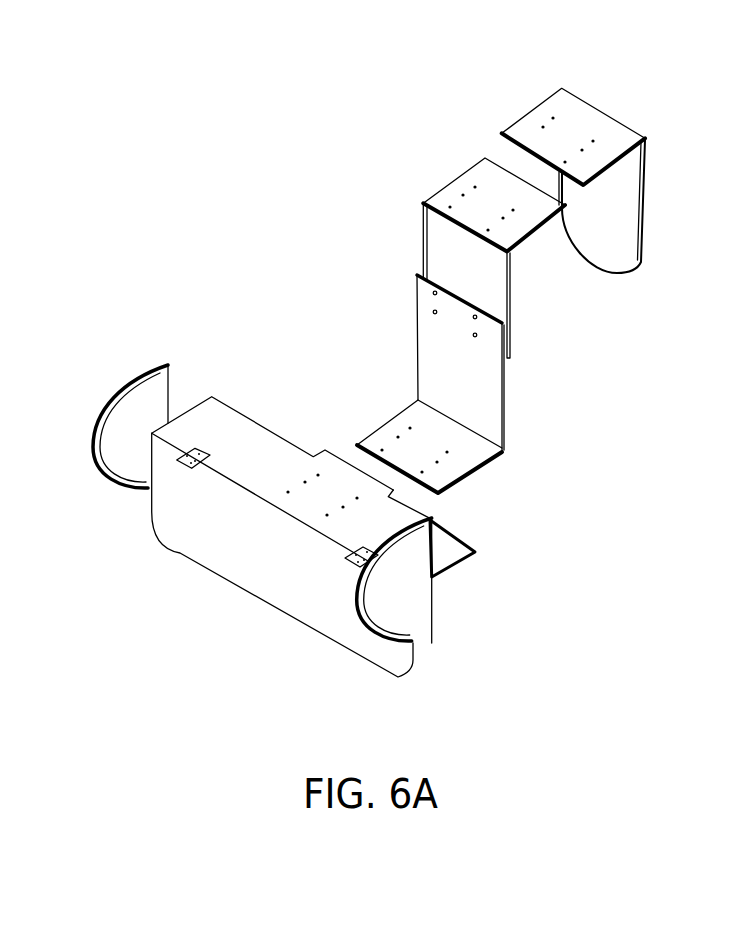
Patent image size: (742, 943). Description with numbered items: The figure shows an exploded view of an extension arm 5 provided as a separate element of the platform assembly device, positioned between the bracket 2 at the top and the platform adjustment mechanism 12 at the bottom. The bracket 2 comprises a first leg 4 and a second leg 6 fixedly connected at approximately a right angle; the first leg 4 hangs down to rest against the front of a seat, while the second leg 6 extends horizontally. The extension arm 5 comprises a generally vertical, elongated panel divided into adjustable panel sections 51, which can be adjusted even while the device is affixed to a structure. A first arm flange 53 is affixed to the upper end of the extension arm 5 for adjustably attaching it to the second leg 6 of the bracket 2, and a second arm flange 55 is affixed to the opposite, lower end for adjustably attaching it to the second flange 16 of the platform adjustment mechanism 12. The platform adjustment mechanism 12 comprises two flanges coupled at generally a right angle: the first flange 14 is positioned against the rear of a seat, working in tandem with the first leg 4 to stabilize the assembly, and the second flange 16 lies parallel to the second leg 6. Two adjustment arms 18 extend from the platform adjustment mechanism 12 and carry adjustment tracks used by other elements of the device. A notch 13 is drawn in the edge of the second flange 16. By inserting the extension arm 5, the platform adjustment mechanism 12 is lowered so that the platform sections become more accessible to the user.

The bracket 2 is at (527, 82).
The first leg 4 is at (617, 213).
The extension arm 5 is at (355, 240).
The second leg 6 is at (582, 112).
The platform adjustment mechanism 12 is at (135, 343).
The notch 13 is at (368, 490).
The first flange 14 is at (245, 568).
The second flange 16 is at (260, 447).
The adjustment arms 18 is at (148, 408).
The adjustable panel sections 51 is at (512, 302).
The first arm flange 53 is at (492, 183).
The second arm flange 55 is at (418, 418).